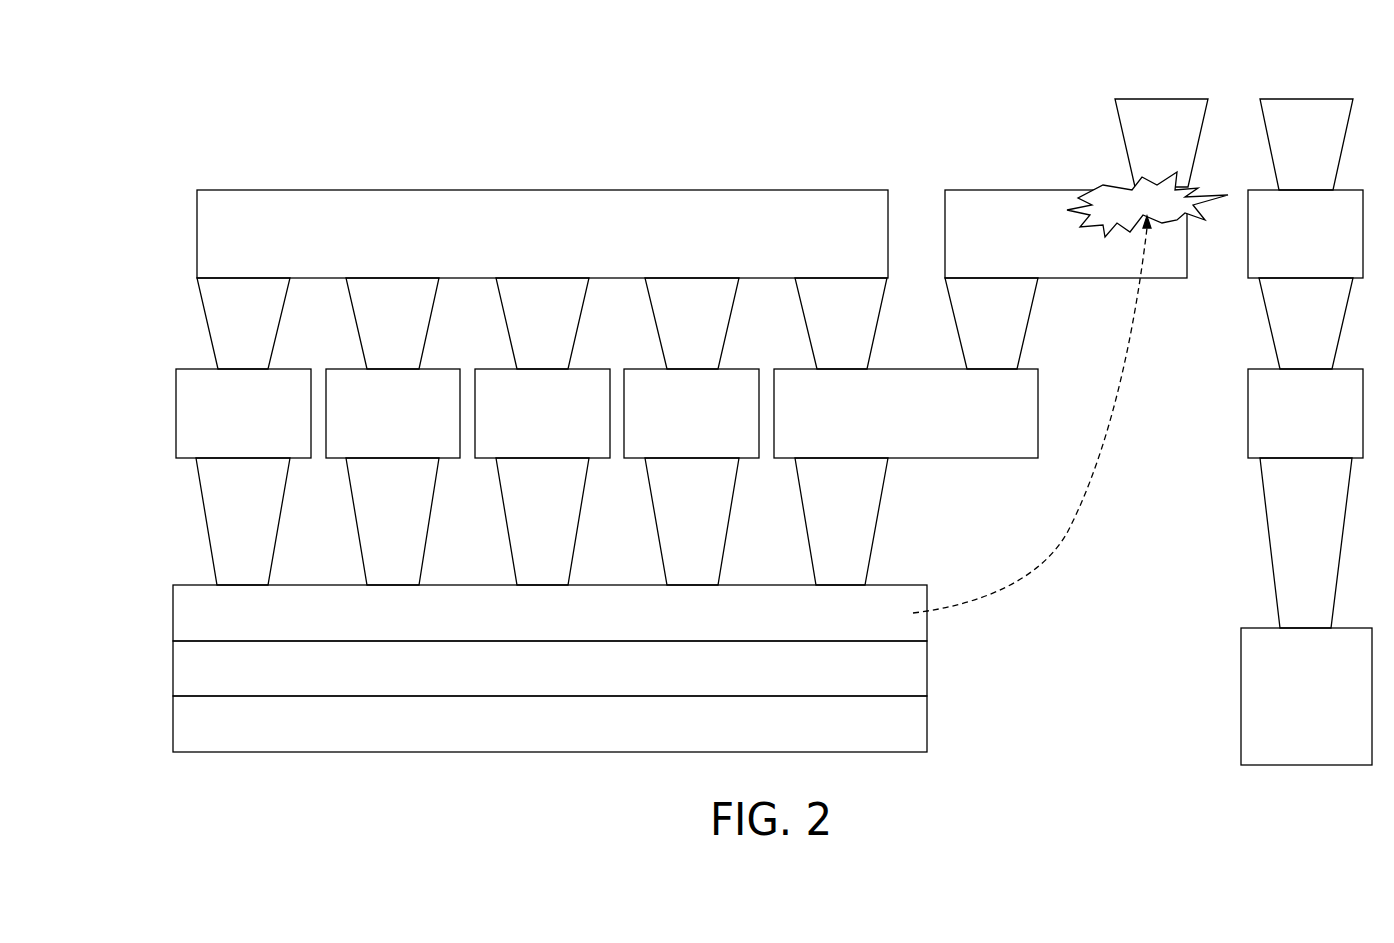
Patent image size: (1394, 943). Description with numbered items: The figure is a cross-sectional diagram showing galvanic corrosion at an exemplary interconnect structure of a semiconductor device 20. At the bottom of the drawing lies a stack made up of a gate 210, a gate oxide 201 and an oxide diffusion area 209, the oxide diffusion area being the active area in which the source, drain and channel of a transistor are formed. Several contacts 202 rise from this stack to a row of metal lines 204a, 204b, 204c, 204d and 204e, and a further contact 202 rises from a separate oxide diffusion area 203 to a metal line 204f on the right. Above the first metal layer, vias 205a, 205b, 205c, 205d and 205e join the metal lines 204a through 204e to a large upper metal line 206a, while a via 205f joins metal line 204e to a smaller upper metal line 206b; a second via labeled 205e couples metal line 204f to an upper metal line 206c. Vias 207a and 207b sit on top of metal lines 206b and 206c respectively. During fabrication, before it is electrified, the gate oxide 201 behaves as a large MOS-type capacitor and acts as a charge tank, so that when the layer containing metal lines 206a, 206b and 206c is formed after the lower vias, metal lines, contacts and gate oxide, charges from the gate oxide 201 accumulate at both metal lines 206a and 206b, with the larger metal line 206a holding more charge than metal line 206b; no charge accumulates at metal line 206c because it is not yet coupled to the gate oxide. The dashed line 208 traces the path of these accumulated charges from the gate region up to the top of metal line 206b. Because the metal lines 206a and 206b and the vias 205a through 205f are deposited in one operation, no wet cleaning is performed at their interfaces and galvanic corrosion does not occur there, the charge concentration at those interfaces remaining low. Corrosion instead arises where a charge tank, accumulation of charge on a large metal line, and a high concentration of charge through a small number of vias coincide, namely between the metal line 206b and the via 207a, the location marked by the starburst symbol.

The semiconductor device 20 is at (177, 68).
The gate oxide 201 is at (531, 683).
The contacts 202 is at (224, 517).
The oxide diffusion area 203 is at (1288, 713).
The metal line 204a is at (218, 430).
The metal line 204b is at (368, 430).
The metal line 204c is at (518, 430).
The metal line 204d is at (667, 430).
The metal line 204e is at (880, 430).
The metal line 204f is at (1283, 430).
The via 205a is at (218, 330).
The via 205b is at (368, 330).
The via 205c is at (518, 330).
The via 205d is at (667, 330).
The via 205e is at (817, 330).
The via 205f is at (969, 330).
The metal line 206a is at (518, 250).
The metal line 206b is at (997, 250).
The metal line 206c is at (1280, 250).
The via 207a is at (1137, 151).
The via 207b is at (1281, 151).
The dashed line 208 is at (1032, 414).
The oxide diffusion area 209 is at (531, 739).
The gate 210 is at (531, 628).